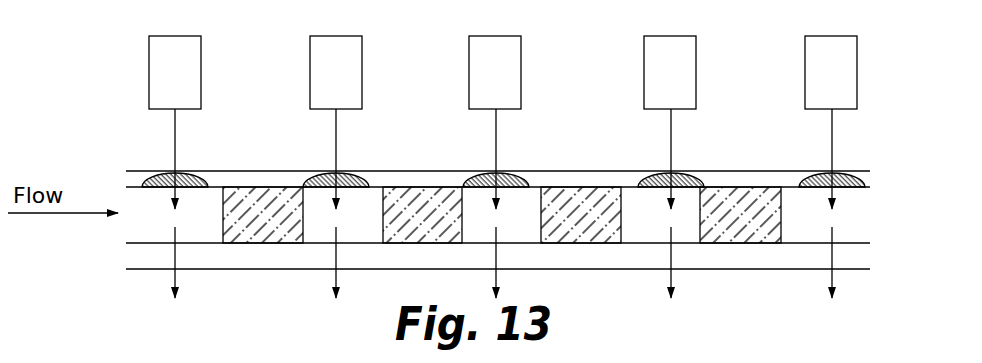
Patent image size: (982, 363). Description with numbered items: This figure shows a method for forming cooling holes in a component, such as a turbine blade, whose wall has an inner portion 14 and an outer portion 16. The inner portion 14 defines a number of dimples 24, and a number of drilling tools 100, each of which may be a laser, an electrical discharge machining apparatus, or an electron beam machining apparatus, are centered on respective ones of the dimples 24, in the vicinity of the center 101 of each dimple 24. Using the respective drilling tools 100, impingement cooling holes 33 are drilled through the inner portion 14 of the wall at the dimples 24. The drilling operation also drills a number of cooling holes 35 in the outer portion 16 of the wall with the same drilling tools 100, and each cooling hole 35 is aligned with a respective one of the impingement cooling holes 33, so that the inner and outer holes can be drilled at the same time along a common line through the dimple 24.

The drilling tool 100 is at (202, 69).
The dimple 24 is at (357, 172).
The impingement cooling hole 33 is at (328, 172).
The center of the dimple 101 is at (499, 171).
The inner portion of the wall 14 is at (743, 180).
The outer portion of the wall 16 is at (138, 254).
The cooling hole 35 is at (333, 257).